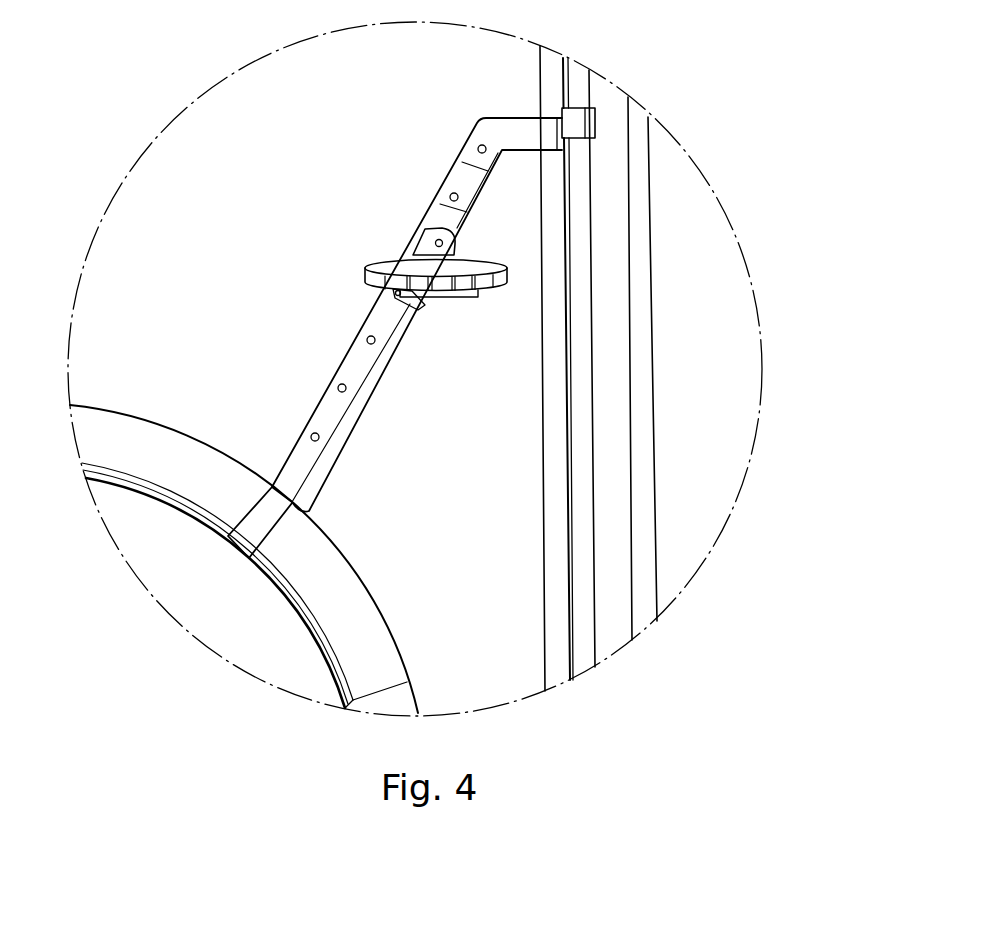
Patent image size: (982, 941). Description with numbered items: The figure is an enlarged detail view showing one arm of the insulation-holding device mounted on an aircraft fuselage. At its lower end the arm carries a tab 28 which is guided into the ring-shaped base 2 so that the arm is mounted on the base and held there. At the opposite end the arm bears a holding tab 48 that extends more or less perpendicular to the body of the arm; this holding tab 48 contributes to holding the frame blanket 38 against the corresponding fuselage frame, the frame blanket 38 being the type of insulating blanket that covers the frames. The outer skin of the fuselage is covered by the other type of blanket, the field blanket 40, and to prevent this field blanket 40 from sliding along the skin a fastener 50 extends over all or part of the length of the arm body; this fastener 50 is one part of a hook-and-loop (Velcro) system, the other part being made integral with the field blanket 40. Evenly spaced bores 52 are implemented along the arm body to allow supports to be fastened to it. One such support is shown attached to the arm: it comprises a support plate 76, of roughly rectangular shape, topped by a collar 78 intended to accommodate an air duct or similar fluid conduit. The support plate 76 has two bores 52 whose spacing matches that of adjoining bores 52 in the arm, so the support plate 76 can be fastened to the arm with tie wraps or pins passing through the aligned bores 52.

The ring-shaped base 2 is at (340, 572).
The tab 28 is at (252, 530).
The frame blanket 38 is at (578, 367).
The field blanket 40 is at (520, 590).
The holding tab 48 is at (578, 120).
The fastener 50 is at (325, 467).
The bores 52 is at (454, 193).
The support plate 76 is at (424, 239).
The collar 78 is at (499, 270).